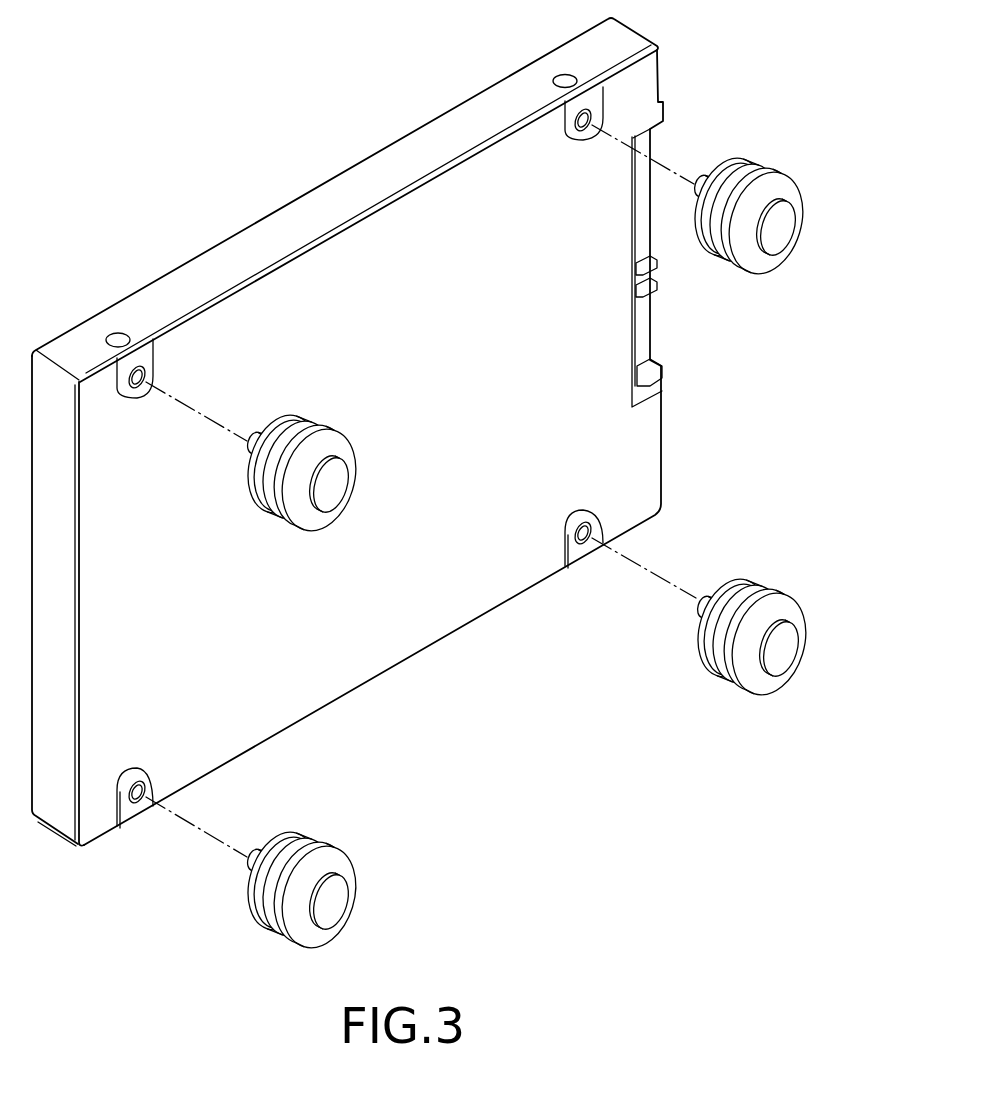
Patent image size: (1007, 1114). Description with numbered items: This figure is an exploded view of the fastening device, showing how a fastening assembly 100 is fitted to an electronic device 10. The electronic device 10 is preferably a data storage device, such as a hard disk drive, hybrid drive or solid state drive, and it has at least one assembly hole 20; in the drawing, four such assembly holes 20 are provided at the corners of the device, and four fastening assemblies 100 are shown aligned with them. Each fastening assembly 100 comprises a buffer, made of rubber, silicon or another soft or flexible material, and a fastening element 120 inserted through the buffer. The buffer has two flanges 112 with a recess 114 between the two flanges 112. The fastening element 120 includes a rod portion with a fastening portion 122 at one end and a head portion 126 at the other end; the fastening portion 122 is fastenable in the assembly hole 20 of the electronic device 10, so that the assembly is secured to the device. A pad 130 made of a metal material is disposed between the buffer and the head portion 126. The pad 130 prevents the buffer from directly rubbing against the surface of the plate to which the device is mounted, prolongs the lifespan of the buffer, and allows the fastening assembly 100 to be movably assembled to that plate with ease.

The electronic device 10 is at (300, 212).
The assembly hole 20 is at (592, 119).
The fastening assembly 100 is at (500, 537).
The flanges 112 is at (364, 897).
The recess 114 is at (310, 852).
The fastening element 120 is at (381, 922).
The fastening portion 122 is at (205, 870).
The head portion 126 is at (280, 901).
The pad 130 is at (388, 902).